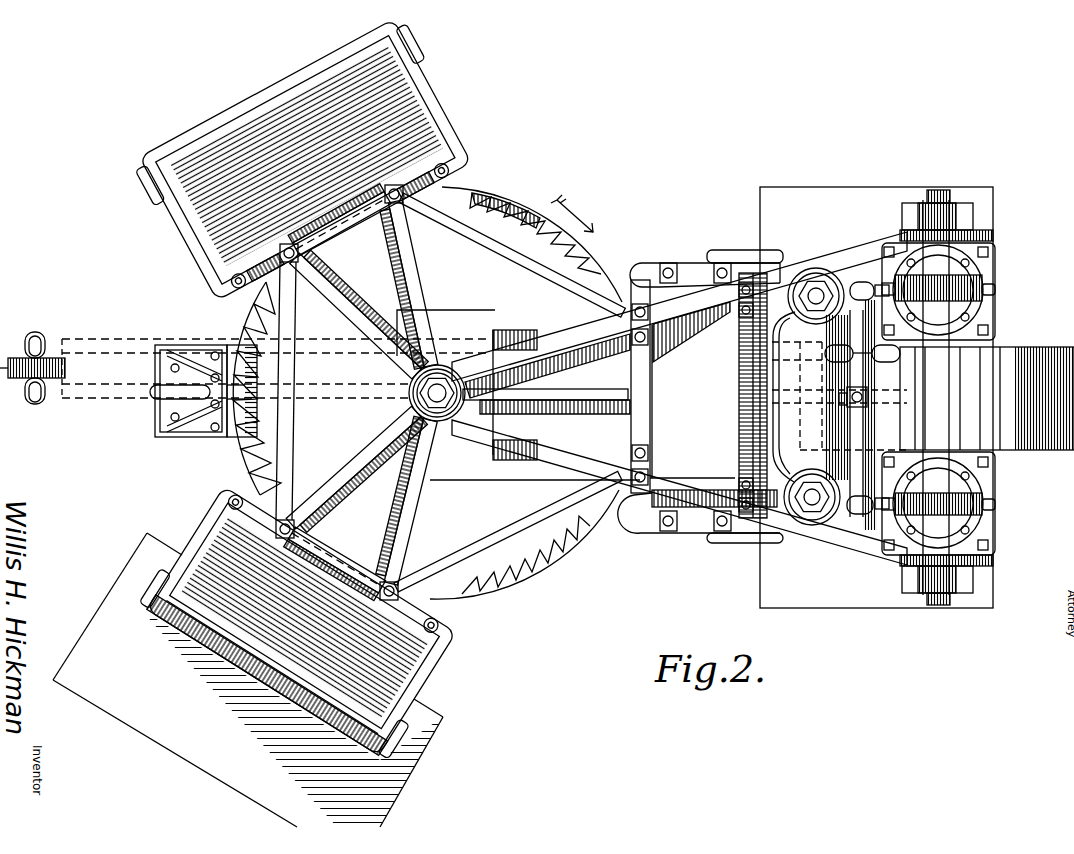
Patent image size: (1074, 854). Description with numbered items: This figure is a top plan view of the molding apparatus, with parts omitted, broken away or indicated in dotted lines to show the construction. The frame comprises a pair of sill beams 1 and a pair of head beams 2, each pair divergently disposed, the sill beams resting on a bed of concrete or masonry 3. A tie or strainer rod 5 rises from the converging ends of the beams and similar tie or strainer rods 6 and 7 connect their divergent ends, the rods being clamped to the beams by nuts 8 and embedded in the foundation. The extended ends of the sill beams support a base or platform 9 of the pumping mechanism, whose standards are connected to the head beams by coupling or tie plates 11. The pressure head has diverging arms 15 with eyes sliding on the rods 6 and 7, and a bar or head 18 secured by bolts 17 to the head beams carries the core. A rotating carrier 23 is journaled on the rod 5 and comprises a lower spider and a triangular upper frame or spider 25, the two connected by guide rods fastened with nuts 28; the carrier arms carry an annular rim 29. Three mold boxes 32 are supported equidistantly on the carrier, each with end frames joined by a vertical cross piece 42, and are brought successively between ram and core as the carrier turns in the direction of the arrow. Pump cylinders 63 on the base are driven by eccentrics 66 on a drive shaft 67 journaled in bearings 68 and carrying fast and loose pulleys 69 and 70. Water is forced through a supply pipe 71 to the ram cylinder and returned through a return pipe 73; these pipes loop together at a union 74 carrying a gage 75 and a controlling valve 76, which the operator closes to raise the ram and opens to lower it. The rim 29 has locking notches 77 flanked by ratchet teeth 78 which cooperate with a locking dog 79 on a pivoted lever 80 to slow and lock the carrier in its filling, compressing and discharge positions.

The sill beams 1 is at (872, 240).
The head beams 2 is at (532, 350).
The bed of concrete or masonry 3 is at (418, 748).
The tie or strainer rod 5 is at (440, 402).
The tie or strainer rod 6 is at (812, 503).
The tie or strainer rod 7 is at (816, 296).
The nuts 8 is at (441, 383).
The base or platform 9 is at (983, 560).
The coupling or tie plates 11 is at (864, 251).
The diverging arms 15 is at (793, 260).
The bolts 17 is at (733, 479).
The bar or head 18 is at (709, 395).
The rotating carrier 23 is at (398, 268).
The upper frame or spider 25 is at (484, 250).
The nuts 28 is at (377, 567).
The annular rim 29 is at (506, 198).
The mold boxes 32 is at (400, 132).
The vertical cross piece 42 is at (546, 443).
The pump cylinders 63 is at (985, 272).
The eccentrics 66 is at (998, 289).
The drive shaft 67 is at (983, 247).
The bearings 68 is at (932, 190).
The fast pulley 69 is at (1023, 352).
The loose pulley 70 is at (1033, 442).
The supply pipe 71 is at (91, 400).
The return pipe 73 is at (105, 340).
The union 74 is at (37, 332).
The gage 75 is at (30, 400).
The controlling valve 76 is at (32, 349).
The locking notches 77 is at (527, 568).
The ratchet teeth 78 is at (497, 580).
The locking dog 79 is at (228, 437).
The pivoted lever 80 is at (158, 400).